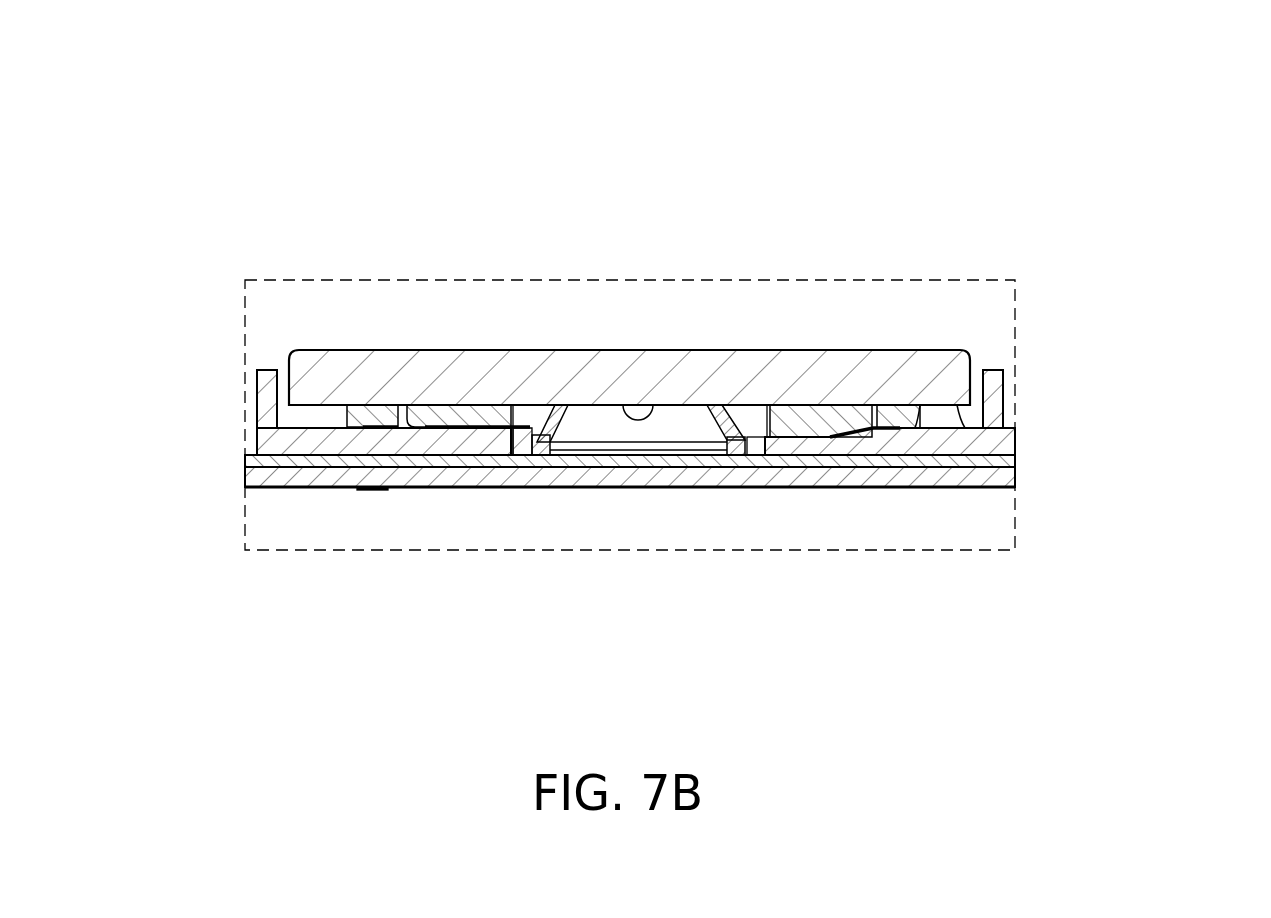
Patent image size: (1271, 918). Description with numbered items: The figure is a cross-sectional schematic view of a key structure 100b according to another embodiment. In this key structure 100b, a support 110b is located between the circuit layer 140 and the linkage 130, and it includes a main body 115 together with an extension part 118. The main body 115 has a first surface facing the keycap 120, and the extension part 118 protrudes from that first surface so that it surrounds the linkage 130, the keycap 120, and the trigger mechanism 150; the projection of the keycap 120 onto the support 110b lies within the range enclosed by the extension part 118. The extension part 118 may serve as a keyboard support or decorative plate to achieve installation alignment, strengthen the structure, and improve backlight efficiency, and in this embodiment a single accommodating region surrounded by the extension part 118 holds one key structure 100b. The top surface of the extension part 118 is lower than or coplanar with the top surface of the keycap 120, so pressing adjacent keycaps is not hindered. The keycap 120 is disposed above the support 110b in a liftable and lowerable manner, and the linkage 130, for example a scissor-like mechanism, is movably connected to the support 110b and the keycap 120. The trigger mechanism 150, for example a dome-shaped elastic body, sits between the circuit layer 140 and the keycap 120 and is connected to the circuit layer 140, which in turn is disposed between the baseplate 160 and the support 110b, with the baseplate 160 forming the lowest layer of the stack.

The key structure 100b is at (1188, 62).
The support 110b is at (613, 399).
The extension part 118 is at (270, 387).
The main body 115 is at (367, 443).
The keycap 120 is at (403, 367).
The linkage 130 is at (477, 410).
The circuit layer 140 is at (252, 459).
The trigger mechanism 150 is at (541, 448).
The baseplate 160 is at (283, 478).